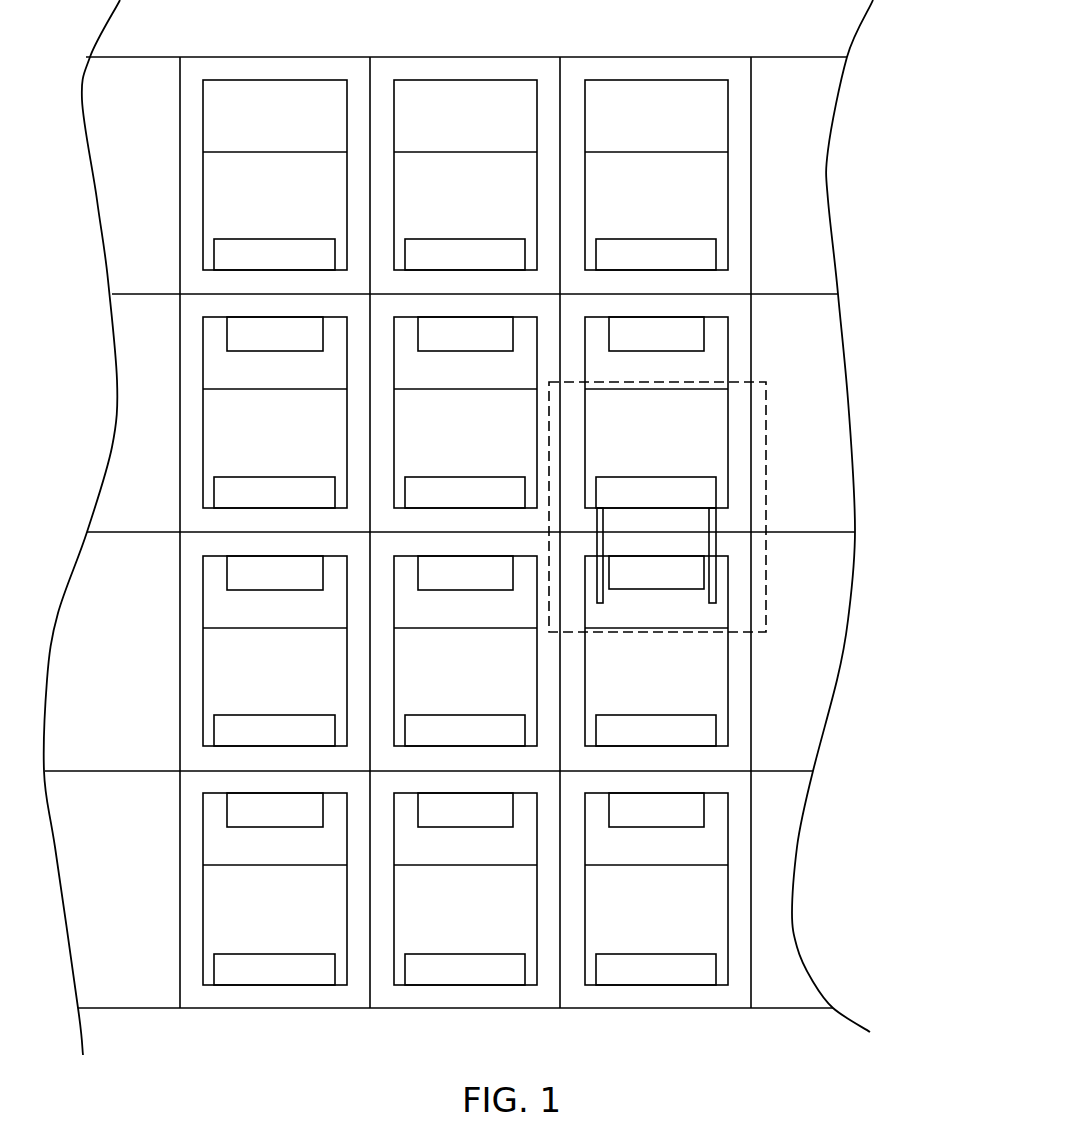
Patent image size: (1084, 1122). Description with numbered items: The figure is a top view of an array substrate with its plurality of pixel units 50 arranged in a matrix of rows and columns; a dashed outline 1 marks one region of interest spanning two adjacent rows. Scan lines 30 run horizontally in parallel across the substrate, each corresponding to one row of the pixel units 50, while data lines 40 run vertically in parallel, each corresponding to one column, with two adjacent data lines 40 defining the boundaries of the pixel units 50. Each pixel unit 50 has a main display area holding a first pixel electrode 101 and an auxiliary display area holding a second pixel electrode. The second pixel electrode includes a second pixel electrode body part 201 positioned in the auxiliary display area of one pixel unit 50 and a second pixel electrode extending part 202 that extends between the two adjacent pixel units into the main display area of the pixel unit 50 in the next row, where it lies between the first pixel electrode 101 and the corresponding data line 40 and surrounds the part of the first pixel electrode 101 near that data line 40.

The pixel unit 1 is at (766, 382).
The scan line 30 is at (807, 532).
The data line 40 is at (752, 432).
The pixel unit 50 is at (730, 343).
The first pixel electrode 101 is at (675, 572).
The second pixel electrode body part 201 is at (698, 492).
The second pixel electrode extending part 202 is at (712, 545).